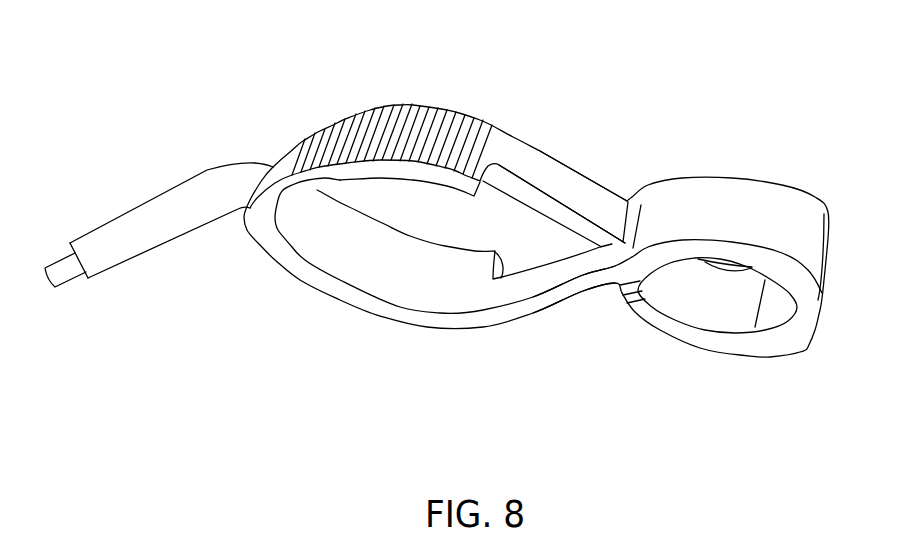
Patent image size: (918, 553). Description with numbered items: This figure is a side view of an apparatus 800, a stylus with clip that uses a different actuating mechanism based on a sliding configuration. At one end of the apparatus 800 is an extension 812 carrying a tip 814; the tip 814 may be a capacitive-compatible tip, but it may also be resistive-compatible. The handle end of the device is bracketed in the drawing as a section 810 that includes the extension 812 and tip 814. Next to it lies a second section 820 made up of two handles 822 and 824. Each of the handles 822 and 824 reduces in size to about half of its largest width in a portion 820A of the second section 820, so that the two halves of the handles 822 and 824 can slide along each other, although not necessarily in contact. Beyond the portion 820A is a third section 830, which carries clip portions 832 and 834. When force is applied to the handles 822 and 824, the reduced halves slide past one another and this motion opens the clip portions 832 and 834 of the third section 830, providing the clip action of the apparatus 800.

The apparatus 800 is at (196, 94).
The handle assembly 810 is at (258, 296).
The extension 812 is at (162, 203).
The tip 814 is at (62, 262).
The second section 820 is at (257, 380).
The handle 822 is at (398, 114).
The handle 824 is at (427, 322).
The portion of second section 820A is at (493, 333).
The third section 830 is at (820, 363).
The clip portion 832 is at (773, 197).
The clip portion 834 is at (710, 338).